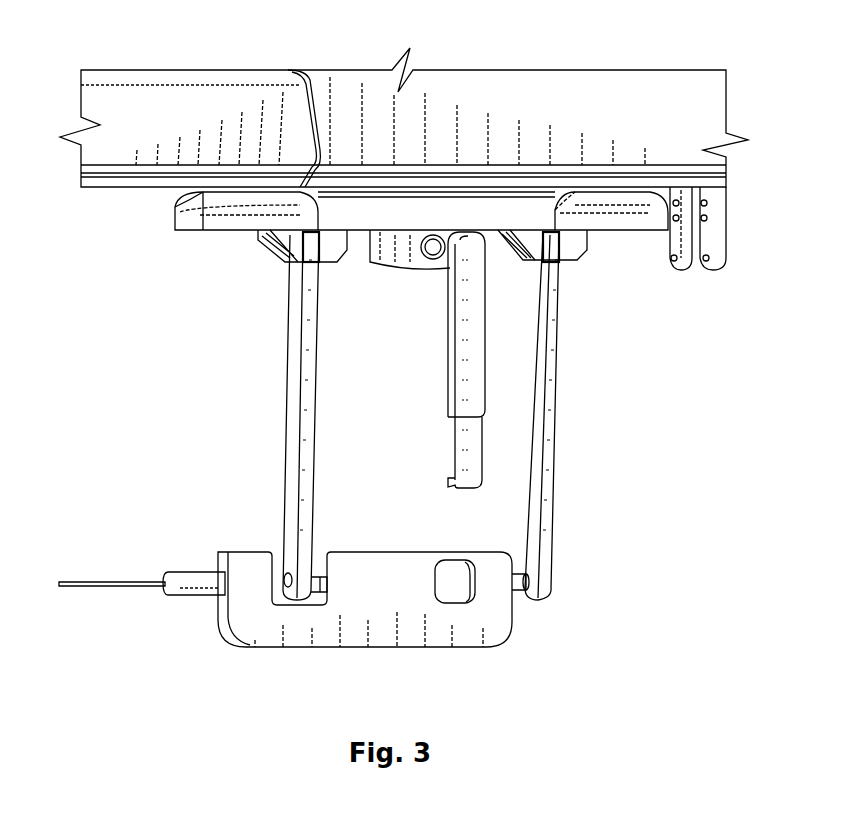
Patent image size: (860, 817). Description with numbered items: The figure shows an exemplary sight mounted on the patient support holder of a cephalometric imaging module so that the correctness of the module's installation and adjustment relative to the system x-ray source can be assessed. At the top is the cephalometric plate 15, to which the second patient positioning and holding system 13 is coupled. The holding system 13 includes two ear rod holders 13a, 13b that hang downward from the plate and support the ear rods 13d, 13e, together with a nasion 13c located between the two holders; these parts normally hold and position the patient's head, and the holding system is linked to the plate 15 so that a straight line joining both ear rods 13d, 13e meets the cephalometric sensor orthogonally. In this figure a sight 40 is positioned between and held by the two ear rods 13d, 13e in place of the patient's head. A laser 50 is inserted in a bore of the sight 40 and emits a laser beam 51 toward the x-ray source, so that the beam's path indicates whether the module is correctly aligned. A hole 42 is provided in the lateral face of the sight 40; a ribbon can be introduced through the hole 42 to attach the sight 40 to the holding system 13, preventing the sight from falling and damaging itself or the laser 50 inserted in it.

The cephalometric plate 15 is at (155, 97).
The second patient positioning and holding system 13 is at (186, 356).
The ear rod holder 13a is at (548, 342).
The ear rod holder 13b is at (300, 418).
The nasion 13c is at (478, 400).
The ear rod 13d is at (518, 598).
The ear rod 13e is at (318, 598).
The sight 40 is at (385, 610).
The hole 42 is at (455, 585).
The laser 50 is at (190, 597).
The laser beam 51 is at (110, 586).